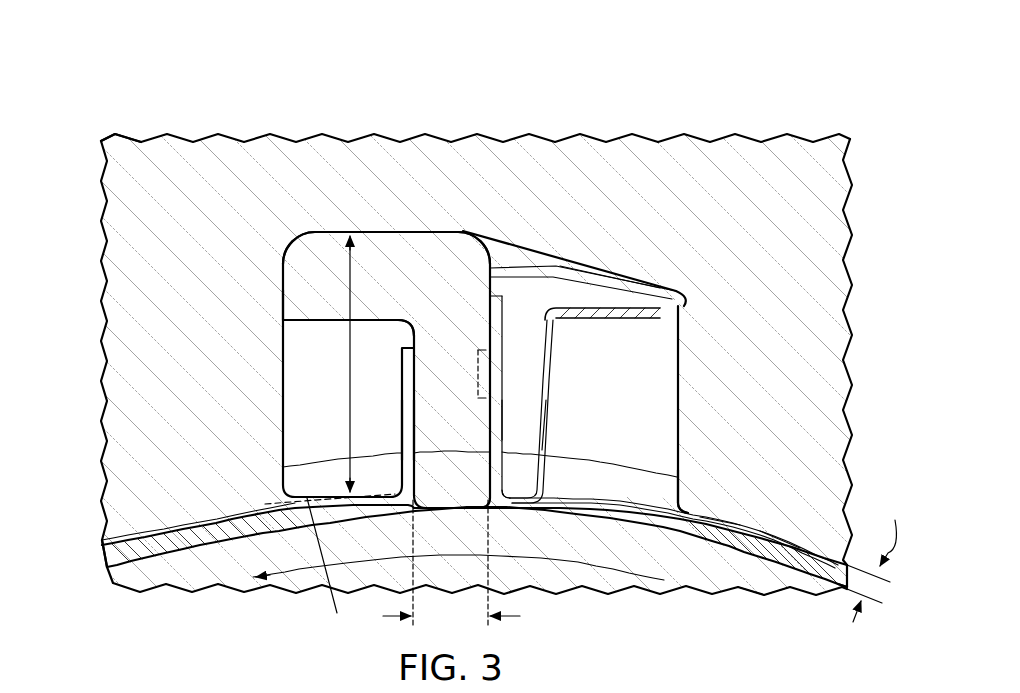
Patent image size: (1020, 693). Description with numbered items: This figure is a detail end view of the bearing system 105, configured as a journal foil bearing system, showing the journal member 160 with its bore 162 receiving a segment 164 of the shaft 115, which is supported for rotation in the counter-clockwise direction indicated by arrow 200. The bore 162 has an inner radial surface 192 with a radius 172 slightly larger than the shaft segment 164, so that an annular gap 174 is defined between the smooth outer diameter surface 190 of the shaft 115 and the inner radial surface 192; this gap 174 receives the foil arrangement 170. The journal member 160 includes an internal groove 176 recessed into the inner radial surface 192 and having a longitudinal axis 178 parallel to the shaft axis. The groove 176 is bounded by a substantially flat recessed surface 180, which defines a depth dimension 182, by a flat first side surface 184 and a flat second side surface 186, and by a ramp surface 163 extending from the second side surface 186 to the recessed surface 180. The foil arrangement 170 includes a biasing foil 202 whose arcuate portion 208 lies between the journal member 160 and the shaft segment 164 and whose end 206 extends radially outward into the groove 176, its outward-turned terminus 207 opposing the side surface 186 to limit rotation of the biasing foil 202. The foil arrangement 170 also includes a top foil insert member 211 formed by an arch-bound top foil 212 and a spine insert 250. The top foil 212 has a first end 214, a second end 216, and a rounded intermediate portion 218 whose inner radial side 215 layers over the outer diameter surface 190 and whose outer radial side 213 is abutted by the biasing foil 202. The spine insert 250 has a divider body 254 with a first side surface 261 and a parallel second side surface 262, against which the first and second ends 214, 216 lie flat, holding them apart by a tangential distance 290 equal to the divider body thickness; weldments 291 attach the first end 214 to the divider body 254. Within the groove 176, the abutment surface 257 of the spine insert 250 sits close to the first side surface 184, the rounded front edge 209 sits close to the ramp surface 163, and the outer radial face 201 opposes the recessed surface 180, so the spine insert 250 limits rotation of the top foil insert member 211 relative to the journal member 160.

The bearing system 105 is at (111, 86).
The journal member 160 is at (192, 279).
The segment of the shaft 164 is at (193, 581).
The arrow 200 is at (600, 565).
The bore 162 is at (474, 532).
The recessed surface 180 is at (396, 370).
The outer radial face 201 is at (398, 233).
The top foil insert member 211 is at (449, 340).
The spine insert 250 is at (469, 212).
The rounded front edge 209 is at (482, 262).
The ramp surface 163 is at (558, 254).
The terminus 207 is at (680, 292).
The internal groove 176 is at (719, 409).
The end of the biasing foil 206 is at (550, 333).
The first side surface of the divider body 261 is at (510, 428).
The second side surface 186 is at (678, 397).
The divider body 254 is at (462, 445).
The first side surface 184 is at (284, 395).
The depth dimension 182 is at (350, 360).
The abutment surface 257 is at (283, 304).
The second side surface of the divider body 262 is at (403, 372).
The second end 216 is at (407, 430).
The longitudinal axis 178 is at (450, 380).
The weldments 291 is at (481, 392).
The first end 214 is at (508, 400).
The outer radial side 213 is at (521, 502).
The biasing foil 202 is at (674, 492).
The top foil 212 is at (703, 478).
The outer diameter surface 190 is at (718, 540).
The arcuate portion 208 is at (763, 538).
The inner radial surface 192 is at (831, 556).
The annular gap 174 is at (882, 557).
The inner radial side 215 is at (518, 512).
The intermediate portion 218 is at (615, 520).
The radius 172 is at (340, 609).
The tangential distance 290 is at (451, 564).
The foil arrangement 170 is at (56, 579).
The shaft 115 is at (781, 624).